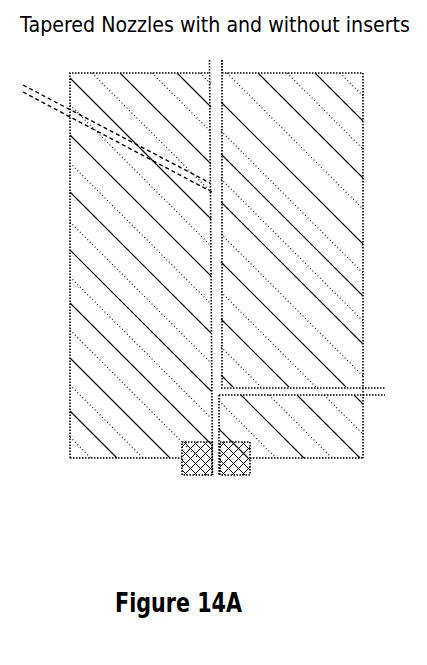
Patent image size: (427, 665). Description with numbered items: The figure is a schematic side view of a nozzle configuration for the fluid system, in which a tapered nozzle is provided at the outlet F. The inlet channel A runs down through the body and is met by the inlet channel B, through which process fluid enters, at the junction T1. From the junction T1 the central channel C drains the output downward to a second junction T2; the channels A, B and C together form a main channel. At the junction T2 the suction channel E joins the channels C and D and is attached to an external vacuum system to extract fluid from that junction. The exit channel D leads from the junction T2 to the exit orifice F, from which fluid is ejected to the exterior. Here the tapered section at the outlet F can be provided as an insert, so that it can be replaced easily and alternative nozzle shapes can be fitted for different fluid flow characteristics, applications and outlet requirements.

The inlet channel A is at (292, 259).
The inlet channel B is at (117, 138).
The central channel C is at (140, 265).
The exit channel D is at (291, 435).
The suction channel E is at (302, 374).
The exit orifice F is at (121, 478).
The junction T1 is at (232, 184).
The junction T2 is at (203, 381).